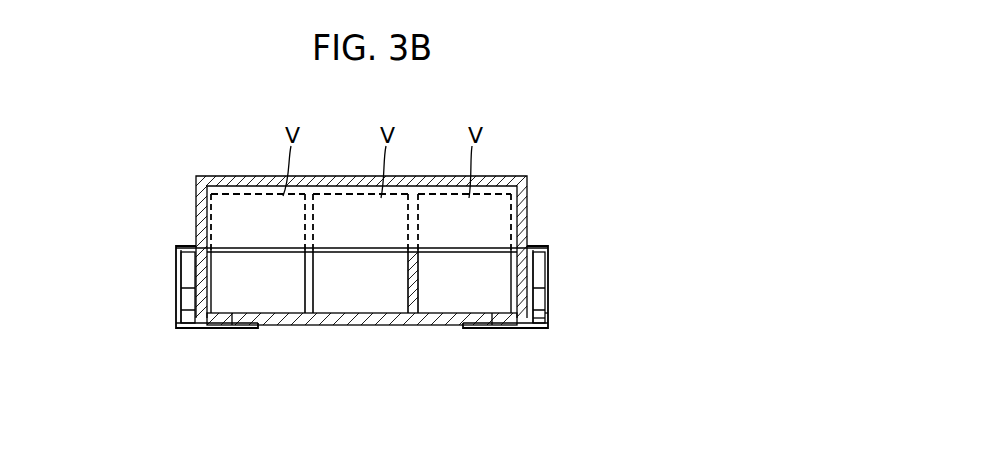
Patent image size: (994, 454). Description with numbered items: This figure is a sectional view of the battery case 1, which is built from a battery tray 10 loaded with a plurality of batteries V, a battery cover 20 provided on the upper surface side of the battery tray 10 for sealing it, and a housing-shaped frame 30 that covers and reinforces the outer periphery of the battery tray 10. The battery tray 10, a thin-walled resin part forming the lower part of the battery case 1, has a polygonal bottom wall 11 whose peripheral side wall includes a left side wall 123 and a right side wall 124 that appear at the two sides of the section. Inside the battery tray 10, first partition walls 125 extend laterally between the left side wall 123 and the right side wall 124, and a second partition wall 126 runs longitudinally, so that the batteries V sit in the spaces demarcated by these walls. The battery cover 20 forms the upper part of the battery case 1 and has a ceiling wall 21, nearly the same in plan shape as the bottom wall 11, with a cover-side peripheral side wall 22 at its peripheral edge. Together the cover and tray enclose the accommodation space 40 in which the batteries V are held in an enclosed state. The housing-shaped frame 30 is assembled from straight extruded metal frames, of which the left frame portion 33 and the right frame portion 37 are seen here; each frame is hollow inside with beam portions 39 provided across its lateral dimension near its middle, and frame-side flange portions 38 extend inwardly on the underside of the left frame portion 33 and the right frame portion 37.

The battery case 1 is at (416, 122).
The battery cover 20 is at (530, 174).
The ceiling wall 21 is at (251, 178).
The cover-side peripheral side wall 22 is at (196, 187).
The accommodation space 40 is at (362, 241).
The battery tray 10 is at (383, 334).
The bottom wall 11 is at (368, 328).
The first partition wall 125 is at (323, 306).
The second partition wall 126 is at (412, 326).
The left frame portion 33 is at (176, 330).
The left side wall 123 is at (193, 332).
The frame-side flange portion 38 is at (253, 328).
The housing-shaped frame 30 is at (554, 272).
The beam portion 39 is at (553, 287).
The right frame portion 37 is at (550, 318).
The right side wall 124 is at (533, 330).